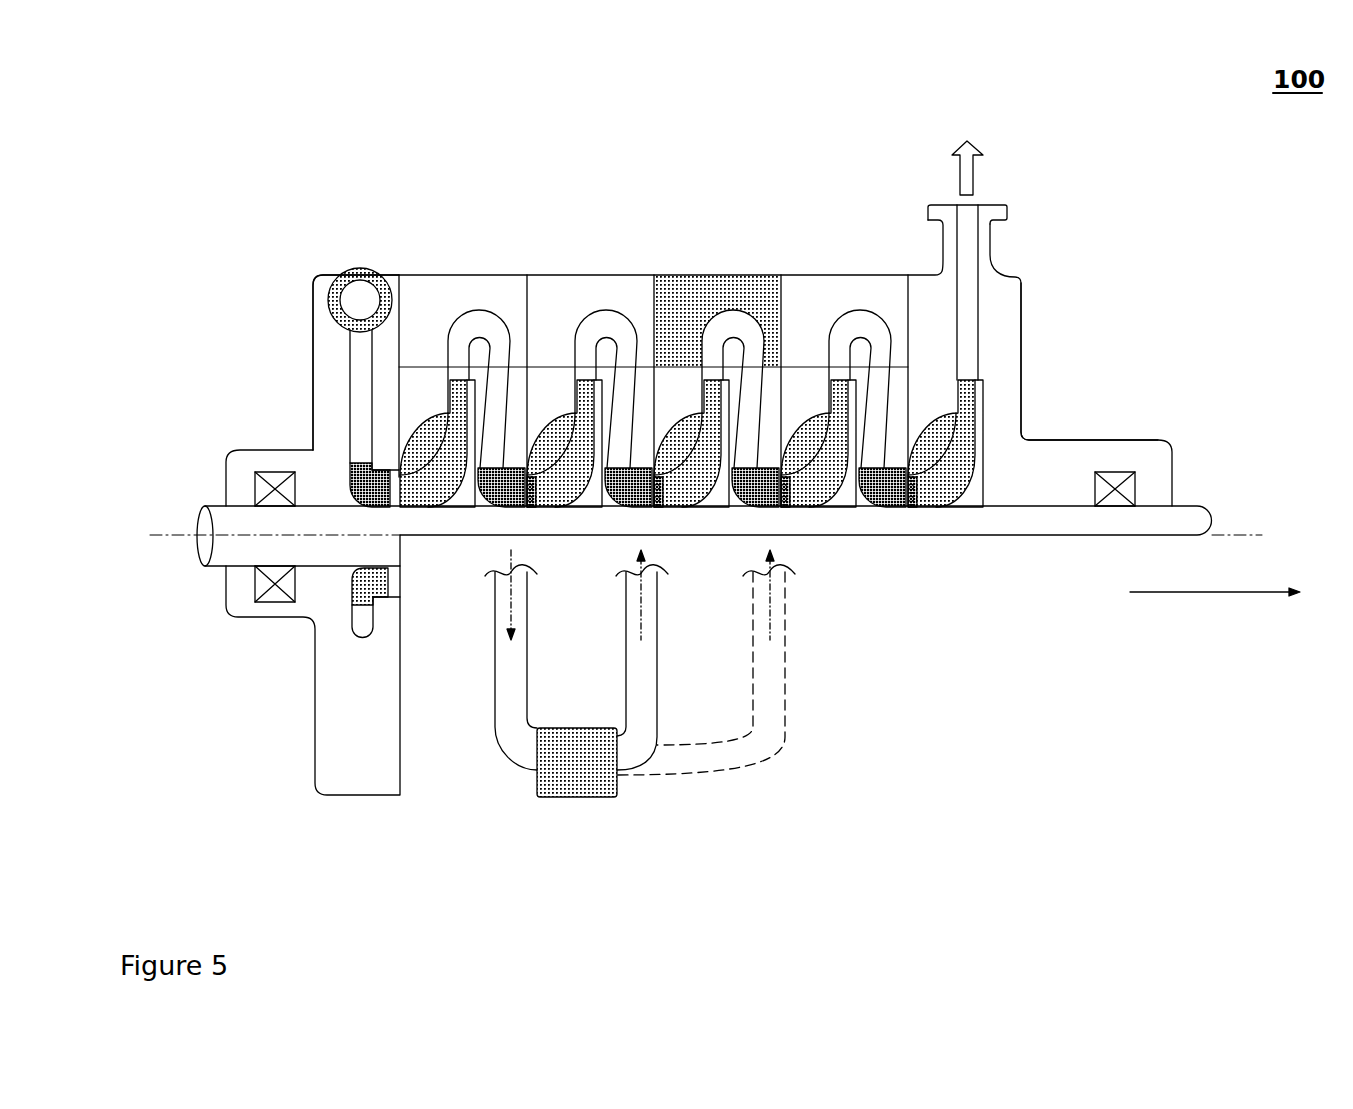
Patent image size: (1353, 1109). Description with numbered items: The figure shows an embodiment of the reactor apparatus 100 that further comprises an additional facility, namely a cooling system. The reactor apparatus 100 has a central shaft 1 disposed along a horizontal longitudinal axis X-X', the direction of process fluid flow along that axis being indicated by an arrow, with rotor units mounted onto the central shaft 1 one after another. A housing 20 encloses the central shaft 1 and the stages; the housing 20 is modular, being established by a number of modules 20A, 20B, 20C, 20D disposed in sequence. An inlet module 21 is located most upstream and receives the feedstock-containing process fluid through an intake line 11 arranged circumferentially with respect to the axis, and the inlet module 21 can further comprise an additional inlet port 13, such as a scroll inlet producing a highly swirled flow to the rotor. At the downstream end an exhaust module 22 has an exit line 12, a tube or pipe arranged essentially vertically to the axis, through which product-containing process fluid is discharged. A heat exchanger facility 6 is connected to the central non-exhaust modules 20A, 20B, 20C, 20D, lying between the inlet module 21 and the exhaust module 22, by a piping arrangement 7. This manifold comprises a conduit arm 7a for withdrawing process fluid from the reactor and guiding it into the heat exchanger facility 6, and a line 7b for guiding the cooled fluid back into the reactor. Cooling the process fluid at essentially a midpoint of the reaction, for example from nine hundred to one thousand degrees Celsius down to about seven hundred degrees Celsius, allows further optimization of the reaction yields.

The reactor apparatus 100 is at (694, 447).
The central shaft 1 is at (217, 550).
The housing 20 is at (305, 268).
The module 20A is at (432, 272).
The module 20B is at (553, 272).
The module 20C is at (723, 270).
The module 20D is at (840, 270).
The intake line 11 is at (352, 307).
The exit line 12 is at (997, 197).
The additional inlet port 13 is at (357, 632).
The inlet module 21 is at (325, 377).
The exhaust module 22 is at (1008, 392).
The heat exchanger facility 6 is at (578, 778).
The piping arrangement 7 is at (660, 729).
The conduit arm 7a is at (503, 683).
The line 7b is at (645, 672).